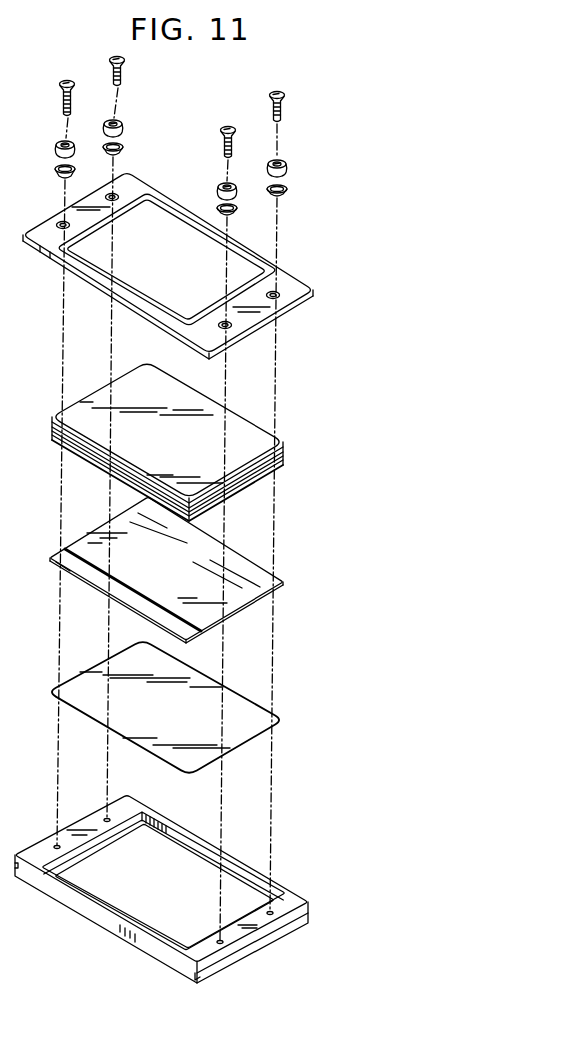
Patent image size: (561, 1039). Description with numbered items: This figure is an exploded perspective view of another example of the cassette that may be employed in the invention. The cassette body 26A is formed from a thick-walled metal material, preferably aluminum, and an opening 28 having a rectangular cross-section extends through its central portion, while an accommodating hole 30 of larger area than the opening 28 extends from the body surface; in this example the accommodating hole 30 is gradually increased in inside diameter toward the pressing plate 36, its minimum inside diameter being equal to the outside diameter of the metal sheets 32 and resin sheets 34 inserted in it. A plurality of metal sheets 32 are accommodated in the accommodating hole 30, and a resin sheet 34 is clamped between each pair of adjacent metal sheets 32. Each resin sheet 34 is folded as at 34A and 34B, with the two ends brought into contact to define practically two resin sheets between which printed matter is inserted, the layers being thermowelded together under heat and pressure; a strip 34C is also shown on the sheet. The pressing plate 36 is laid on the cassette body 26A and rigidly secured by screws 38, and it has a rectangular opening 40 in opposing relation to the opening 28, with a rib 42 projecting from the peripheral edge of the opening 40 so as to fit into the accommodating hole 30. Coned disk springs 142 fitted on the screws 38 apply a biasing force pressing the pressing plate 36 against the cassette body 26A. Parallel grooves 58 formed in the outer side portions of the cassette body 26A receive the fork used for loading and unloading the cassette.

The cassette body 26A is at (161, 895).
The opening 28 is at (173, 855).
The accommodating hole 30 is at (97, 845).
The metal sheets 32 is at (185, 402).
The resin sheet 34 is at (166, 570).
The fold of resin sheet 34A is at (92, 583).
The fold of resin sheet 34B is at (243, 553).
The strip electrode 34C is at (147, 578).
The pressing plate 36 is at (298, 282).
The screws 38 is at (62, 108).
The rectangular opening 40 is at (174, 254).
The rib 42 is at (82, 278).
The grooves 58 is at (248, 948).
The coned disk springs 142 is at (52, 150).